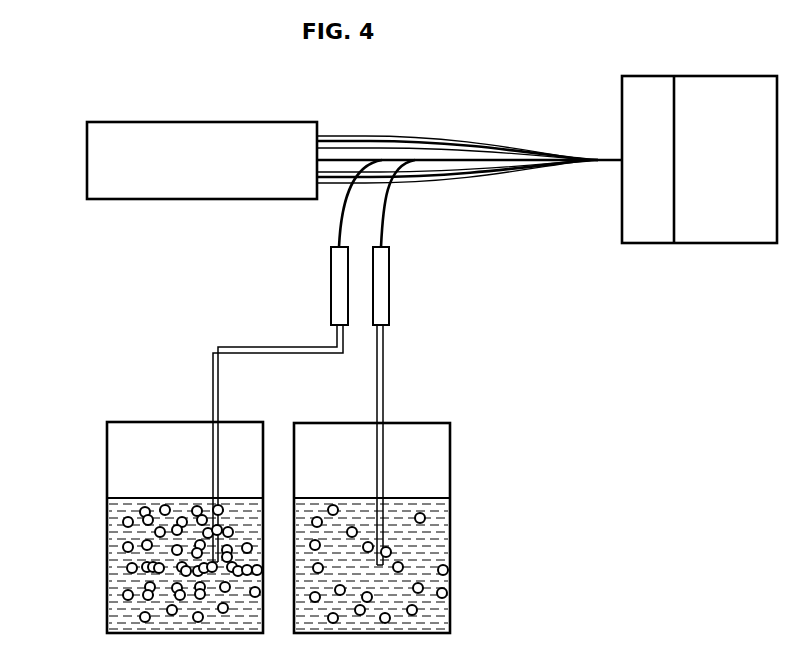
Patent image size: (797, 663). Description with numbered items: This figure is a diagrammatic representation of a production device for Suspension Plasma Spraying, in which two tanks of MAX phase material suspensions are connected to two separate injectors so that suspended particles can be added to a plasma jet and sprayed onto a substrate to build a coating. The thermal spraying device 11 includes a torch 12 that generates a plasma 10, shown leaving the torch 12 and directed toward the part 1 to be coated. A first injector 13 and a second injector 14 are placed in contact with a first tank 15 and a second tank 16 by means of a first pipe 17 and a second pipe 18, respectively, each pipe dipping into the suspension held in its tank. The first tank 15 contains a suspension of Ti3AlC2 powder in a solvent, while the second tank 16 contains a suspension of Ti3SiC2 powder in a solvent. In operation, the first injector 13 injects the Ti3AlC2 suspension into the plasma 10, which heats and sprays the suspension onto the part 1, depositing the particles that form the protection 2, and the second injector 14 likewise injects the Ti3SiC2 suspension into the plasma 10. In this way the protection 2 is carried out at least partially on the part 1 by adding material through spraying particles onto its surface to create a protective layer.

The part 1 is at (719, 169).
The protection 2 is at (642, 169).
The plasma 10 is at (425, 128).
The thermal spraying device 11 is at (13, 168).
The torch 12 is at (192, 168).
The first injector 13 is at (324, 283).
The second injector 14 is at (396, 283).
The first tank 15 is at (97, 471).
The second tank 16 is at (461, 471).
The first pipe 17 is at (204, 383).
The second pipe 18 is at (392, 383).